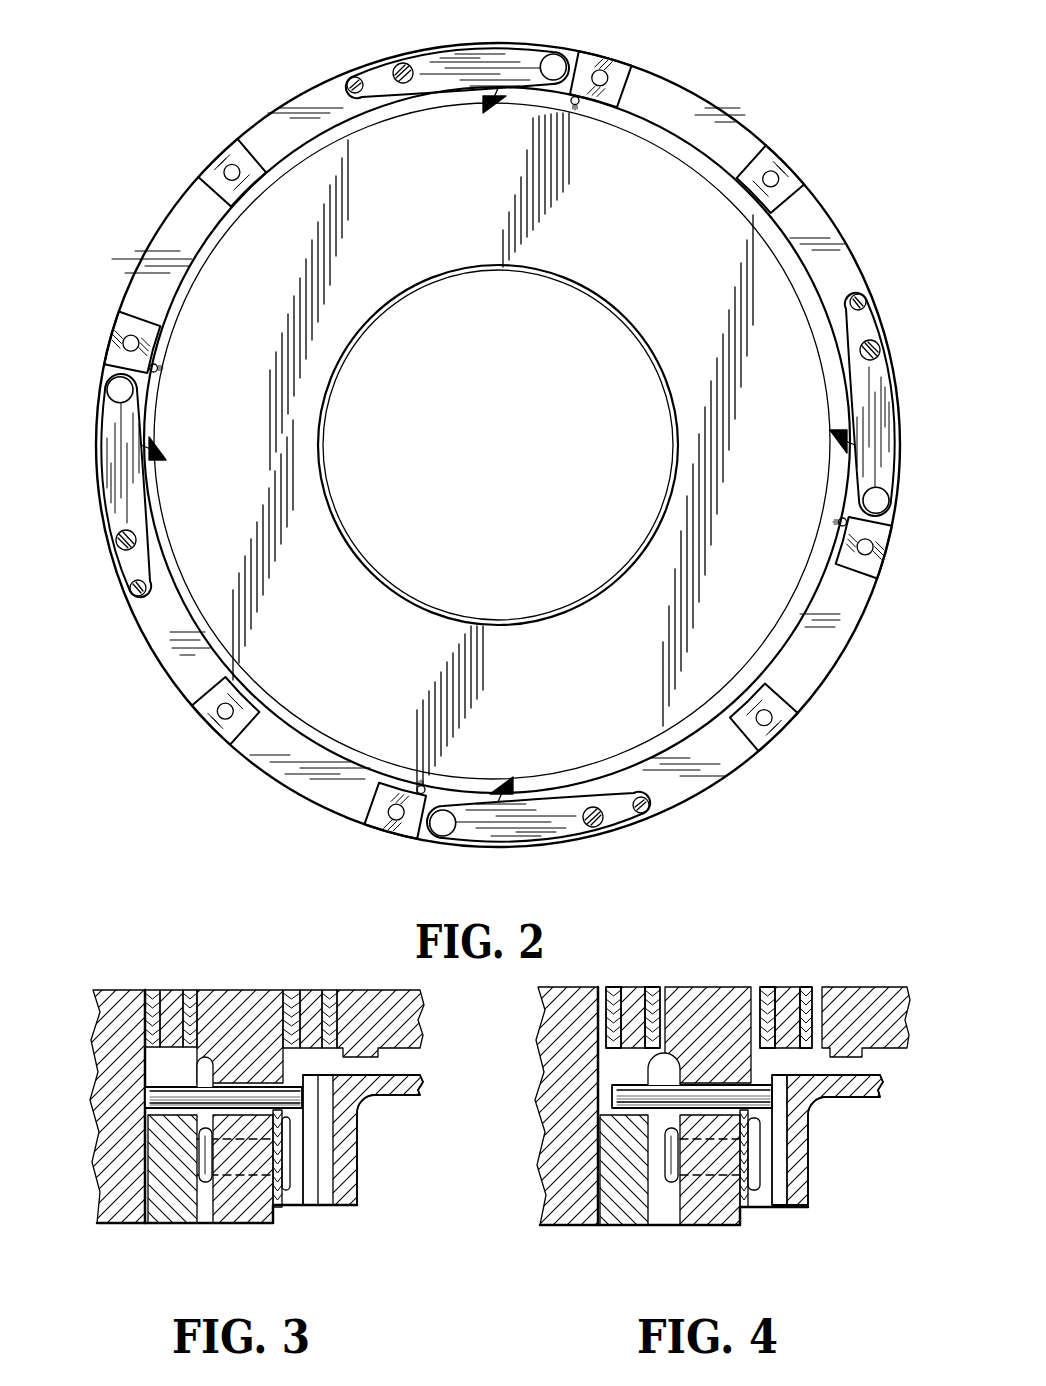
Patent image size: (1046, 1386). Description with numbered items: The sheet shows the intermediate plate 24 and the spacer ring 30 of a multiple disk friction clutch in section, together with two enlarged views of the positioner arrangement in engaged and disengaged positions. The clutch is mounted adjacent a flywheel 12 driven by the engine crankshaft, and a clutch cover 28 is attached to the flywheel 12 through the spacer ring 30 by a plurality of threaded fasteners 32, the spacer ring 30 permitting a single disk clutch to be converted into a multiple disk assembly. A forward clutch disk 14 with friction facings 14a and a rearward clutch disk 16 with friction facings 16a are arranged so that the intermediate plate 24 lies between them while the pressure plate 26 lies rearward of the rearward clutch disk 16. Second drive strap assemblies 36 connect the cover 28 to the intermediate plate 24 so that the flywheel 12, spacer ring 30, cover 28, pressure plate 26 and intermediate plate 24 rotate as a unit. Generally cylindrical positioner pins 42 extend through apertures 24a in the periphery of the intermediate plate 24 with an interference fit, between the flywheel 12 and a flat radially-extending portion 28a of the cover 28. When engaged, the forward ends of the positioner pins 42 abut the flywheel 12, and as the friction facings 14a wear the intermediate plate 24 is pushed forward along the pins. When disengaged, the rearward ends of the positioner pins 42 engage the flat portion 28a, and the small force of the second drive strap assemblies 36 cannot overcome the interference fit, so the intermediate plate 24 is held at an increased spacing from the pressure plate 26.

In FIG. 3, the flywheel 12 is at (112, 1210).
In FIG. 4, the flywheel 12 is at (577, 1212).
In FIG. 3, the forward clutch disk 14 is at (163, 1025).
In FIG. 4, the forward clutch disk 14 is at (640, 1025).
In FIG. 3, the friction facings 14a is at (177, 990).
In FIG. 4, the friction facings 14a is at (650, 990).
In FIG. 3, the rearward clutch disk 16 is at (308, 1020).
In FIG. 4, the rearward clutch disk 16 is at (793, 1020).
In FIG. 3, the friction facings 16a is at (330, 990).
In FIG. 4, the friction facings 16a is at (800, 990).
In FIG. 2, the intermediate plate 24 is at (438, 210).
In FIG. 3, the intermediate plate 24 is at (254, 1212).
In FIG. 4, the intermediate plate 24 is at (724, 1212).
In FIG. 3, the aperture 24a is at (225, 1090).
In FIG. 4, the aperture 24a is at (620, 1092).
In FIG. 3, the pressure plate 26 is at (400, 1030).
In FIG. 4, the pressure plate 26 is at (893, 1005).
In FIG. 3, the clutch cover 28 is at (355, 1097).
In FIG. 4, the clutch cover 28 is at (808, 1099).
In FIG. 3, the flat radially-extending portion 28a is at (310, 1127).
In FIG. 4, the flat radially-extending portion 28a is at (763, 1128).
In FIG. 2, the spacer ring 30 is at (820, 206).
In FIG. 3, the spacer ring 30 is at (170, 1212).
In FIG. 4, the spacer ring 30 is at (625, 1212).
In FIG. 2, the threaded fasteners 32 is at (400, 66).
In FIG. 2, the second drive strap assemblies 36 is at (526, 43).
In FIG. 3, the second drive strap assemblies 36 is at (292, 1208).
In FIG. 4, the second drive strap assemblies 36 is at (762, 1208).
In FIG. 2, the positioner pins 42 is at (582, 101).
In FIG. 3, the positioner pins 42 is at (200, 1104).
In FIG. 4, the positioner pins 42 is at (612, 1108).